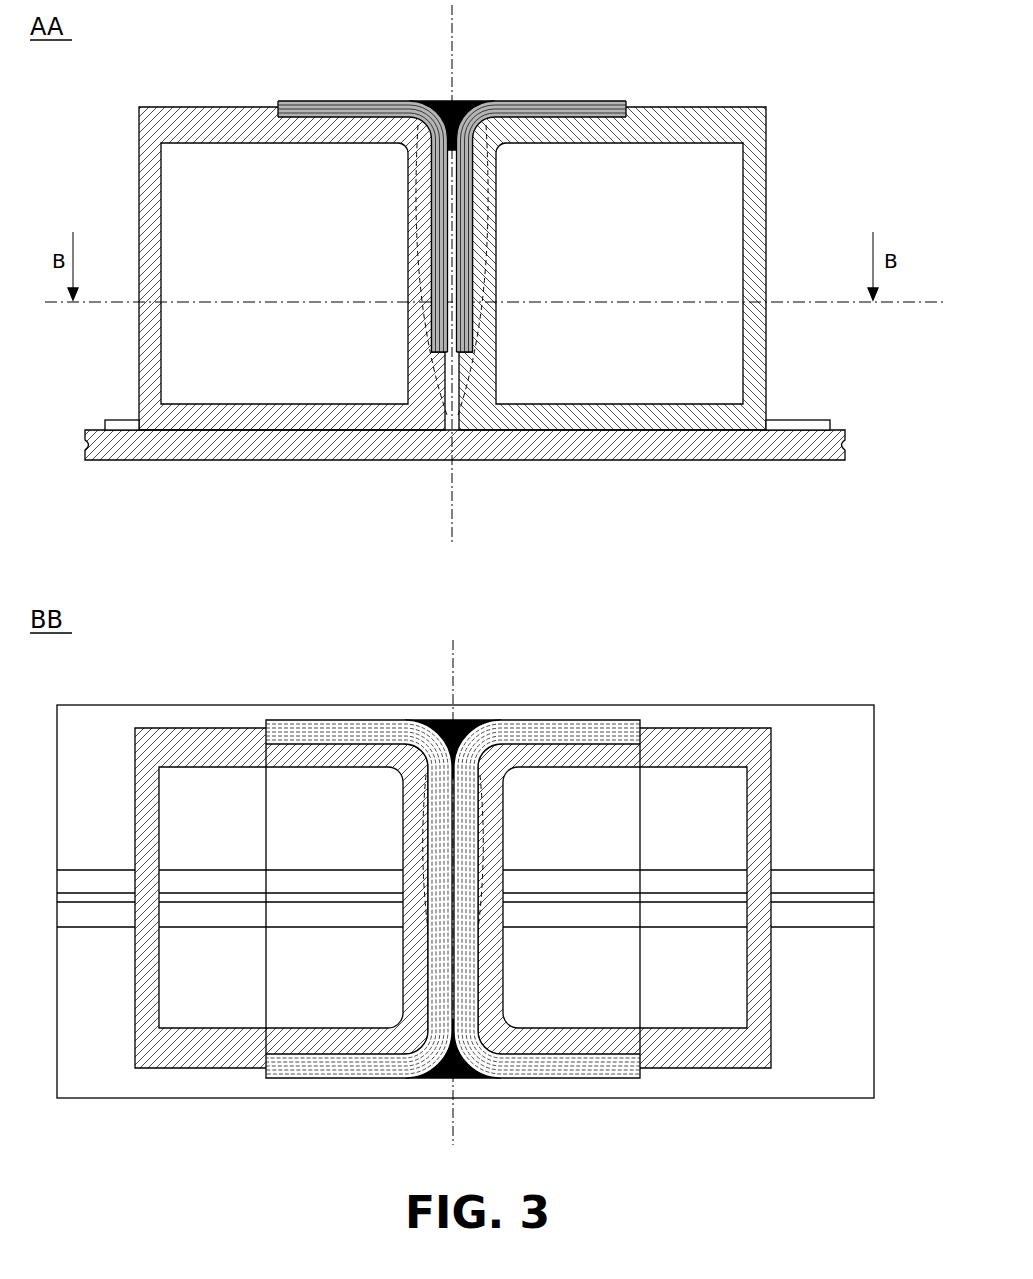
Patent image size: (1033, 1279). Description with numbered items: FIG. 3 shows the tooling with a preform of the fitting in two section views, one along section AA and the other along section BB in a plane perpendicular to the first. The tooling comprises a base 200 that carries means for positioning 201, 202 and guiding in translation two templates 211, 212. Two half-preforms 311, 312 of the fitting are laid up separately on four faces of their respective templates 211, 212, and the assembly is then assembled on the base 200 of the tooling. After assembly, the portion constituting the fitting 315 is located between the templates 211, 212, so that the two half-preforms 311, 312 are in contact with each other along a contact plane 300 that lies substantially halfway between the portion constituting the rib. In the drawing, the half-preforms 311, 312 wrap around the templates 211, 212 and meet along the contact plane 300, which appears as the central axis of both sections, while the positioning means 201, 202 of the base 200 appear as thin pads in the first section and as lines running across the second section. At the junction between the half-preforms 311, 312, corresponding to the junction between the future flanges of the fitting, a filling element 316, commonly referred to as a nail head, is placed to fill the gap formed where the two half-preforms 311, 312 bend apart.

The base 200 is at (300, 461).
The positioning means 201 is at (828, 927).
The positioning means 202 is at (122, 420).
The template 211 is at (766, 265).
The template 212 is at (139, 265).
The contact plane 300 is at (452, 522).
The half-preform 311 is at (535, 100).
The half-preform 312 is at (330, 100).
The portion constituting the fitting 315 is at (462, 432).
The filling element 316 is at (452, 100).